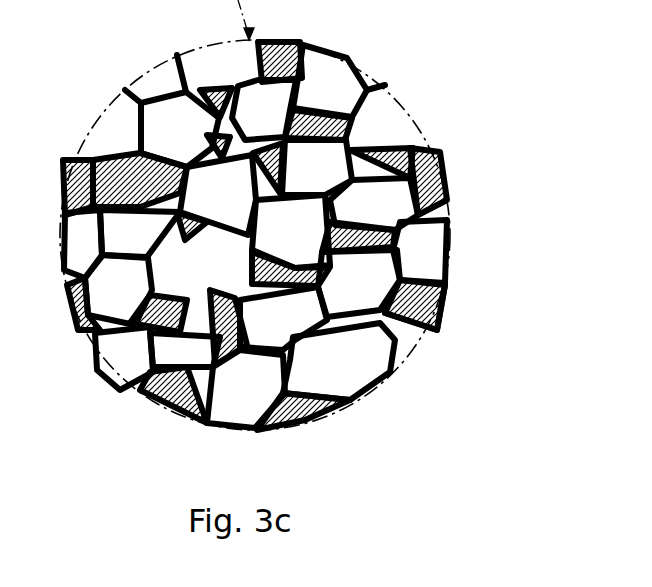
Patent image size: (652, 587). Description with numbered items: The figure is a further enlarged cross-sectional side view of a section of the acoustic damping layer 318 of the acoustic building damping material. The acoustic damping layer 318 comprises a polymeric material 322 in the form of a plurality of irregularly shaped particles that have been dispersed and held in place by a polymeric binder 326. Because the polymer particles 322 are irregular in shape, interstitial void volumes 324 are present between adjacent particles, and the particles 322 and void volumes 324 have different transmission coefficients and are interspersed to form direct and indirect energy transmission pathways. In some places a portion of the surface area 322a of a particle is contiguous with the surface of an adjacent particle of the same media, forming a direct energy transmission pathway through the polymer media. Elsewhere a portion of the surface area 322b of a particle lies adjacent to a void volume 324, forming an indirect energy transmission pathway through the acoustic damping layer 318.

The acoustic damping layer 318 is at (500, 228).
The polymeric material 322 is at (340, 370).
The surface area contiguous to adjacent particle 322a is at (325, 397).
The surface area adjacent to void volume 322b is at (277, 405).
The interstitial void volume 324 is at (443, 305).
The polymeric binder 326 is at (430, 322).